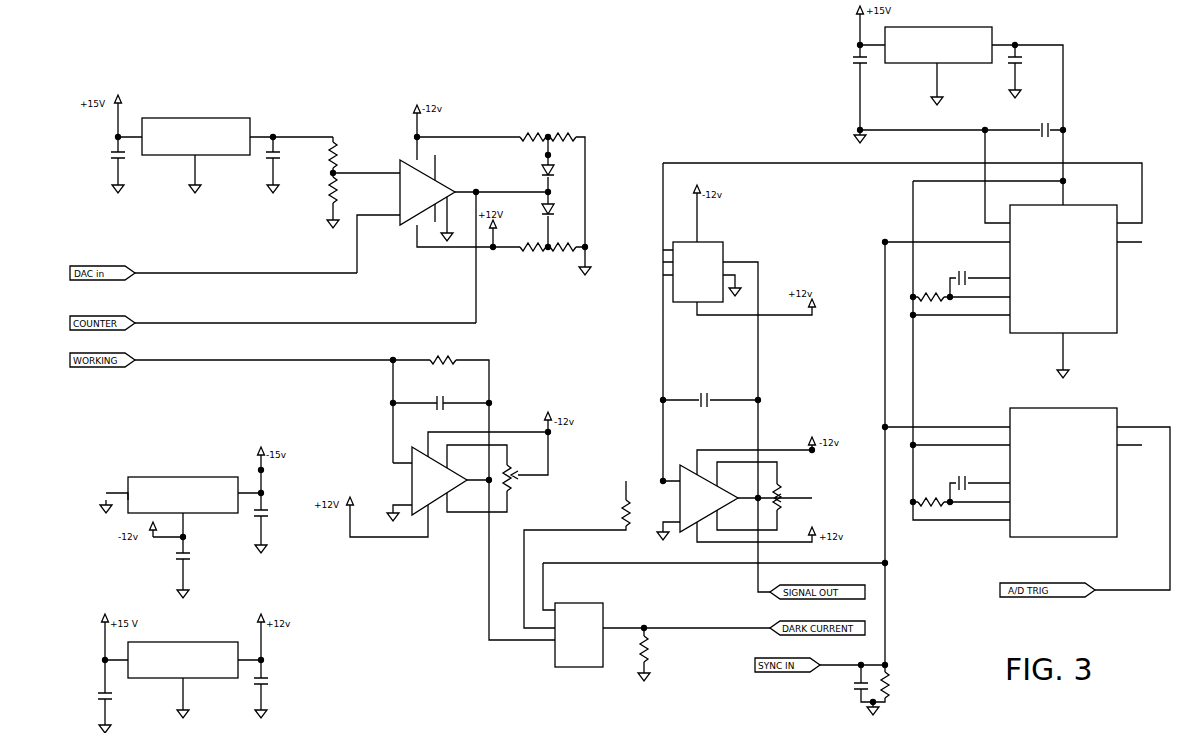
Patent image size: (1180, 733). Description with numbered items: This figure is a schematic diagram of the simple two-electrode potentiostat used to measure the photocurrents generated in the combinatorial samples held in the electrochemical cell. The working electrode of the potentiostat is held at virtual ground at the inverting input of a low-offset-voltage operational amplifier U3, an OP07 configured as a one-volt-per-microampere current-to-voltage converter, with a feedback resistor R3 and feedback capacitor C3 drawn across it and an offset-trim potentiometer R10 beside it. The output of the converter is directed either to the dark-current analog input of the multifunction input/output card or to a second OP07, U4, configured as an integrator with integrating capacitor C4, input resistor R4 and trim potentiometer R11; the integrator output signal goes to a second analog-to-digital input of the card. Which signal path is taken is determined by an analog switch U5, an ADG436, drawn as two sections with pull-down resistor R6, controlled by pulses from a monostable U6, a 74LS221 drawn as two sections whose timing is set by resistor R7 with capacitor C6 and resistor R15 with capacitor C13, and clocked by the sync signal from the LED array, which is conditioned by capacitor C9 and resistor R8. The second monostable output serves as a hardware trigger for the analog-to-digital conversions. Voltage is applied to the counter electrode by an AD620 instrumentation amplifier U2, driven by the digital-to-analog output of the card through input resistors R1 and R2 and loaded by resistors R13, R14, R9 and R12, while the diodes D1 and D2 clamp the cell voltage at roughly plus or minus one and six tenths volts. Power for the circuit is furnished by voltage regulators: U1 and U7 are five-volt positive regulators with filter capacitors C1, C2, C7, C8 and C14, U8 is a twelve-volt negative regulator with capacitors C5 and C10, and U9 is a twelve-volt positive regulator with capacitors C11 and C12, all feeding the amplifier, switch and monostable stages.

The LM340-5.0 voltage regulator U1 is at (194, 136).
The AD620 instrumentation amplifier U2 is at (422, 195).
The low-offset-voltage operational amplifier U3 is at (434, 483).
The second OP07 U4 is at (703, 500).
The ADG436 analog switch U5 is at (635, 458).
The monostable U6 is at (1064, 364).
The LM340-5.0 voltage regulator U7 is at (939, 44).
The LM320-12 voltage regulator U8 is at (183, 494).
The LM340-12 voltage regulator U9 is at (183, 659).
The capacitor C1 is at (106, 157).
The capacitor C2 is at (282, 157).
The capacitor C3 is at (438, 397).
The capacitor C4 is at (703, 393).
The capacitor C5 is at (272, 513).
The capacitor C6 is at (966, 269).
The capacitor C7 is at (849, 60).
The capacitor C8 is at (1023, 60).
The capacitor C9 is at (853, 687).
The capacitor C10 is at (194, 558).
The capacitor C11 is at (115, 696).
The capacitor C12 is at (272, 683).
The capacitor C13 is at (963, 474).
The capacitor C14 is at (1042, 123).
The resistor R1 is at (341, 155).
The resistor R2 is at (322, 190).
The resistor R3 is at (443, 353).
The resistor R4 is at (616, 513).
The resistor R6 is at (653, 649).
The resistor R7 is at (931, 290).
The resistor R8 is at (893, 685).
The resistor R9 is at (533, 240).
The potentiometer R10 is at (519, 481).
The potentiometer R11 is at (786, 491).
The resistor R12 is at (563, 240).
The resistor R13 is at (530, 130).
The resistor R14 is at (563, 130).
The resistor R15 is at (930, 495).
The diode D1 is at (556, 209).
The diode D2 is at (556, 171).